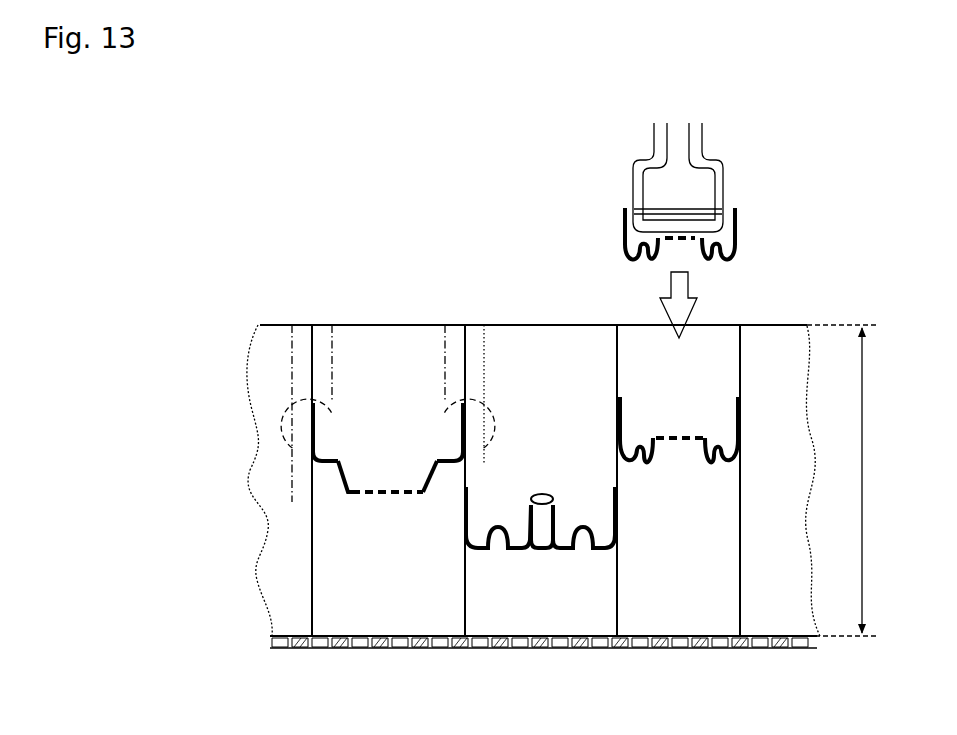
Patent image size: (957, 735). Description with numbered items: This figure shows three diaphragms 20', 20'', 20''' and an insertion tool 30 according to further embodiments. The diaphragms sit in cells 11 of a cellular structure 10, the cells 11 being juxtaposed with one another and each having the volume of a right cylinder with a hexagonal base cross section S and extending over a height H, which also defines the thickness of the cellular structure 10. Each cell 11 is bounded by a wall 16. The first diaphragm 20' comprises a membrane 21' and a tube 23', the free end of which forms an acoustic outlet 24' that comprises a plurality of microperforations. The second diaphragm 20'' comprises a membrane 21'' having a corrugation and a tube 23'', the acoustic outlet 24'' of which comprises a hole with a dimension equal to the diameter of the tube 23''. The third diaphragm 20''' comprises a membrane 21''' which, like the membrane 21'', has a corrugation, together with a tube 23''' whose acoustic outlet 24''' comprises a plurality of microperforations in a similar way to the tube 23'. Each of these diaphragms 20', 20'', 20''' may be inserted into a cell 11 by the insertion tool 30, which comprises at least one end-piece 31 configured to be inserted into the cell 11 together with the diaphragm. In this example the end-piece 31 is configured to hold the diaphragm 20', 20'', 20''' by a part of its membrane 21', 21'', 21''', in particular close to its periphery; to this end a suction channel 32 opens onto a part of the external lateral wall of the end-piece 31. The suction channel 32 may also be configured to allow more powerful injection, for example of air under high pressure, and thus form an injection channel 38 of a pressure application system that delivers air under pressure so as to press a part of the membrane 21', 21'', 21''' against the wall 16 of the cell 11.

The cellular structure 10 is at (393, 308).
The cell 11 is at (349, 622).
The wall of the cell 16 is at (620, 566).
The hexagonal base cross section S is at (678, 641).
The height of the cells H is at (847, 480).
The diaphragm 20' is at (388, 463).
The membrane 21' is at (344, 400).
The tube 23' is at (359, 515).
The acoustic outlet 24' is at (417, 524).
The diaphragm 20'' is at (540, 445).
The membrane 21'' is at (584, 485).
The tube 23'' is at (525, 458).
The acoustic outlet 24'' is at (535, 560).
The diaphragm 20''' is at (706, 439).
The membrane 21''' is at (748, 400).
The tube 23''' is at (669, 385).
The acoustic outlet 24''' is at (648, 470).
The insertion tool 30 is at (721, 219).
The end-piece 31 is at (734, 180).
The suction channel 32 is at (653, 208).
The injection channel 38 is at (735, 212).